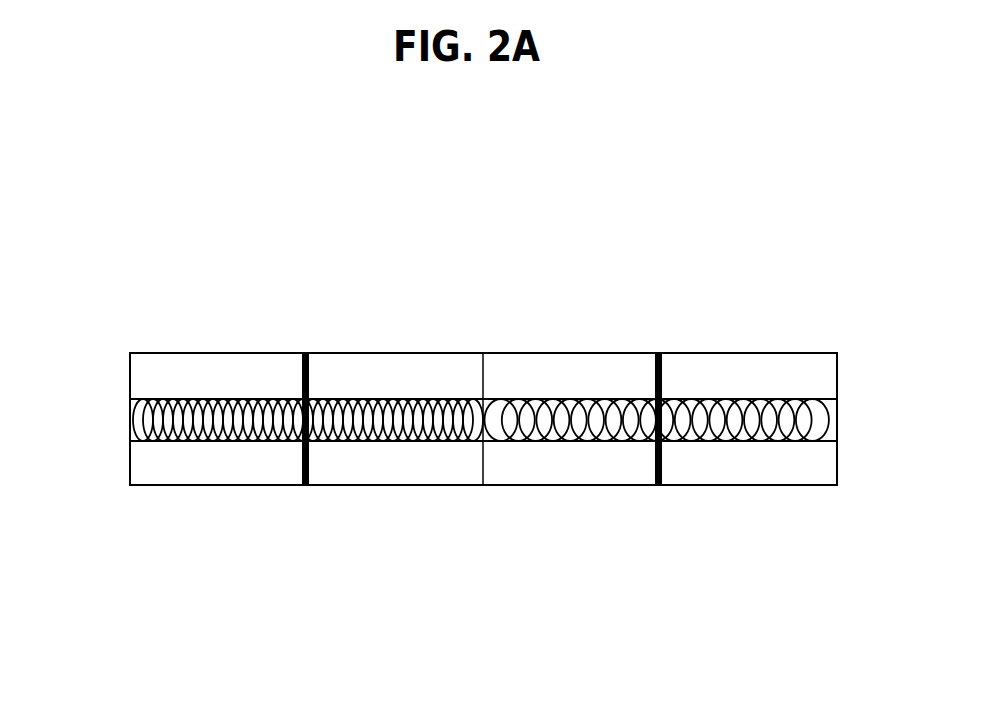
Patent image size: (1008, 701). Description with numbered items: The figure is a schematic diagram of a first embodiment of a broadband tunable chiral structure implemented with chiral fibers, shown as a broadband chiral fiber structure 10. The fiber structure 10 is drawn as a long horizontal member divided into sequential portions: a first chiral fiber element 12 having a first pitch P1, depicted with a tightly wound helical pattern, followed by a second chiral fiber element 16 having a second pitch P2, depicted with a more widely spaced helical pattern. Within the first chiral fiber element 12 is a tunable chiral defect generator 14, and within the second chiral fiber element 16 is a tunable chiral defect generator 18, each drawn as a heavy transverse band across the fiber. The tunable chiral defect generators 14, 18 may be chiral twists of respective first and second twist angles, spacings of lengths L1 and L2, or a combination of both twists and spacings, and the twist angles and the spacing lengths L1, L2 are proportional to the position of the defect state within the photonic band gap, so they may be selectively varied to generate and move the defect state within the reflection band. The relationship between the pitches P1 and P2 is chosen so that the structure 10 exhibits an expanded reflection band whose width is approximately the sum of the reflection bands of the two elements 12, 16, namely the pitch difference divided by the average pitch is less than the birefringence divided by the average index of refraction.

The broadband chiral fiber structure 10 is at (722, 228).
The first chiral fiber element 12 is at (218, 353).
The tunable chiral defect generator 14 is at (305, 353).
The second chiral fiber element 16 is at (747, 353).
The tunable chiral defect generator 18 is at (658, 353).
The first pitch P1 is at (205, 425).
The second pitch P2 is at (587, 433).
The spacing length L1 is at (307, 485).
The spacing length L2 is at (660, 485).